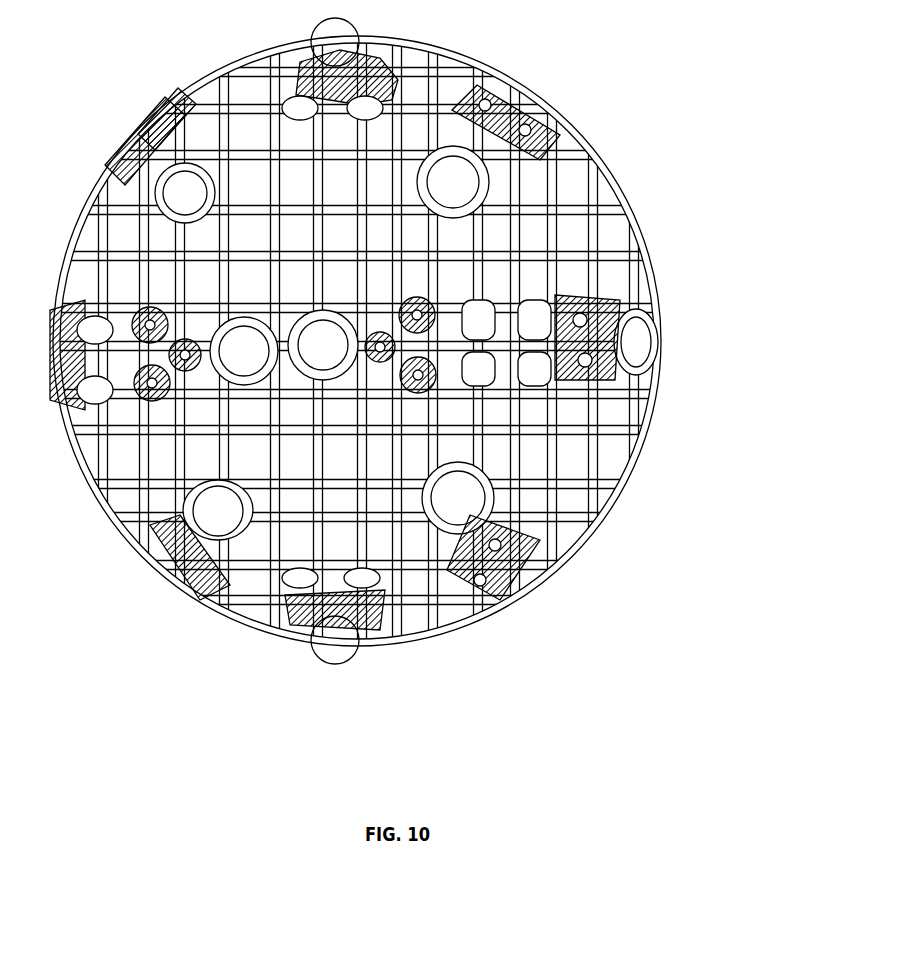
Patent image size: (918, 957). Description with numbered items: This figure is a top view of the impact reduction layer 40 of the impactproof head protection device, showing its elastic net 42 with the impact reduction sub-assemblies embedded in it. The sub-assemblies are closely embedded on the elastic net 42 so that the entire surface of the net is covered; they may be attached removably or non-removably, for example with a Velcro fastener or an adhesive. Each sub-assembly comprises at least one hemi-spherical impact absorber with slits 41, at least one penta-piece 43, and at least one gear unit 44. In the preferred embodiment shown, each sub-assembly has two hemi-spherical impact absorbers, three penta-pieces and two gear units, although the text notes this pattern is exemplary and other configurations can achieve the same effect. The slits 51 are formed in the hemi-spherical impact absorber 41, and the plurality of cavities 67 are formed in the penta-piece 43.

The impact reduction layer 40 is at (667, 260).
The hemi-spherical impact absorber with slits 41 is at (473, 497).
The elastic net 42 is at (413, 600).
The penta-piece 43 is at (287, 617).
The gear unit 44 is at (535, 298).
The slits in the hemi-spherical impact absorber 51 is at (213, 178).
The plurality of cavities in the penta-piece 67 is at (150, 400).